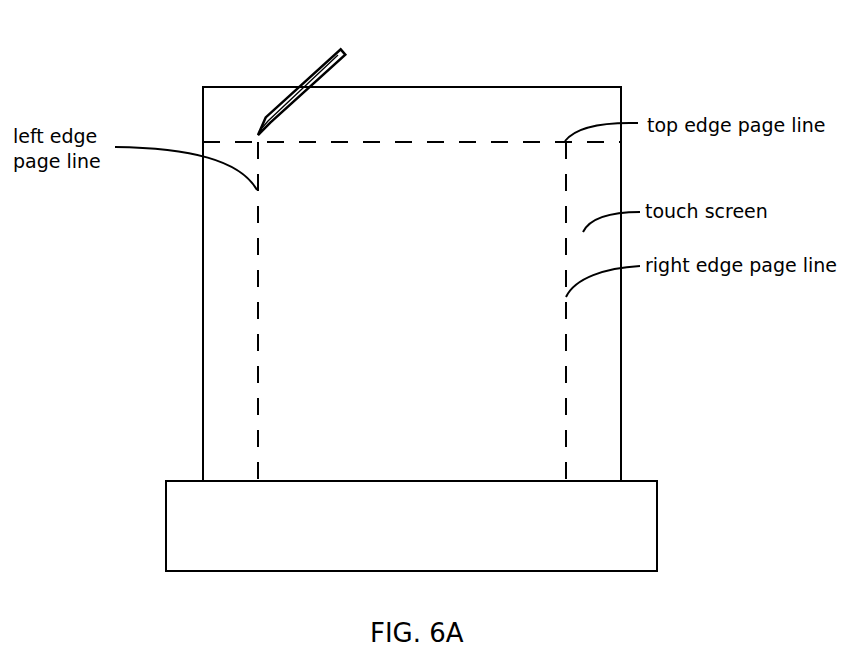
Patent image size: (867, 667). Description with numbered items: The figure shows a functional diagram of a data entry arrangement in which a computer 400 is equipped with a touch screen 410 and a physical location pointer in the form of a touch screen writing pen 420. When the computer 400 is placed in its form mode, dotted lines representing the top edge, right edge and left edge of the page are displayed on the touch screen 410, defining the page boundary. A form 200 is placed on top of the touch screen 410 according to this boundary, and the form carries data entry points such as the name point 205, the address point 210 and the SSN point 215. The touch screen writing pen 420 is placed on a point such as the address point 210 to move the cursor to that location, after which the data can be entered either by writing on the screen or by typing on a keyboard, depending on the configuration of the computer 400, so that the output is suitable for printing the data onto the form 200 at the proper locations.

The form 200 is at (258, 135).
The name field 205 is at (358, 183).
The point 210 is at (388, 220).
The SSN field 215 is at (345, 258).
The computer 400 is at (630, 537).
The touch screen 410 is at (507, 92).
The touch screen writing pen 420 is at (343, 52).